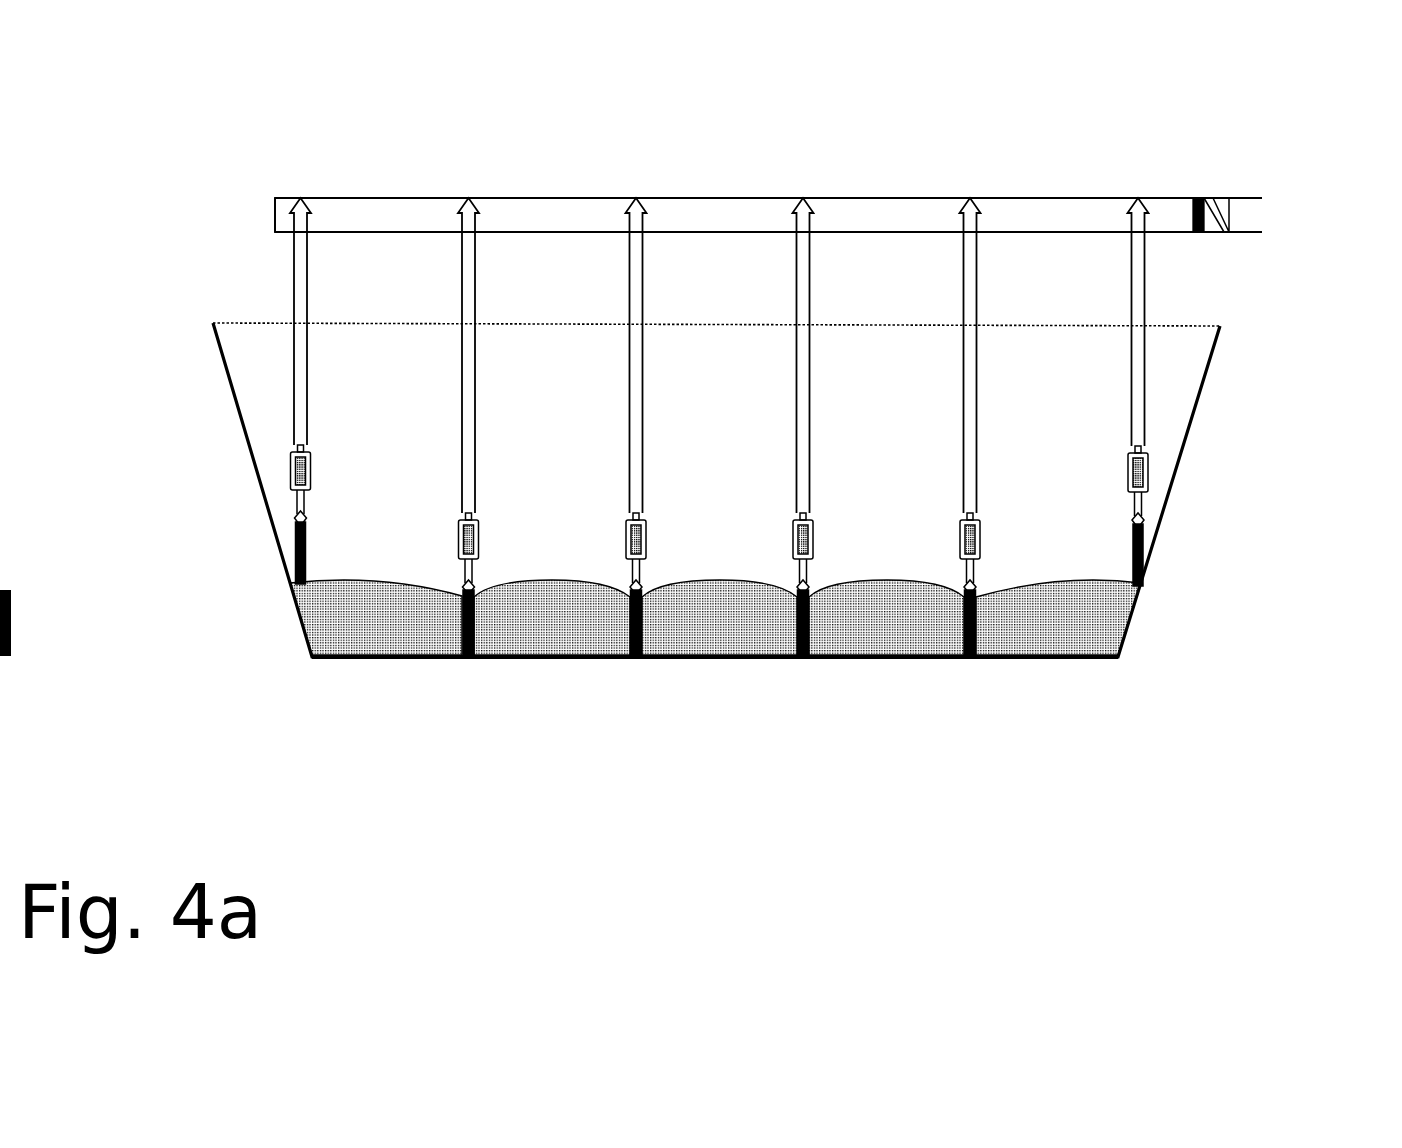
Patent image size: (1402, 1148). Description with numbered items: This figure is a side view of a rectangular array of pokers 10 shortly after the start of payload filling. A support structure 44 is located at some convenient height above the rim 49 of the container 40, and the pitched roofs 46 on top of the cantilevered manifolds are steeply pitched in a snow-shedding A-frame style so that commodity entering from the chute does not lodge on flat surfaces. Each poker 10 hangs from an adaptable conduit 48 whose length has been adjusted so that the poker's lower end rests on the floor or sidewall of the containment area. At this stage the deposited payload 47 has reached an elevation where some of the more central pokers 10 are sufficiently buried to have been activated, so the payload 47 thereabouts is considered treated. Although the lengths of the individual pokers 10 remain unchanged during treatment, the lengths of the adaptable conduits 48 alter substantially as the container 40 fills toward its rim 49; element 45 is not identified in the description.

The poker 10 is at (574, 529).
The container 40 is at (799, 528).
The support structure 44 is at (768, 178).
The bar end block 45 is at (1236, 171).
The roof 46 is at (195, 188).
The payload 47 is at (715, 617).
The adaptable conduit 48 is at (719, 275).
The rim 49 is at (637, 285).